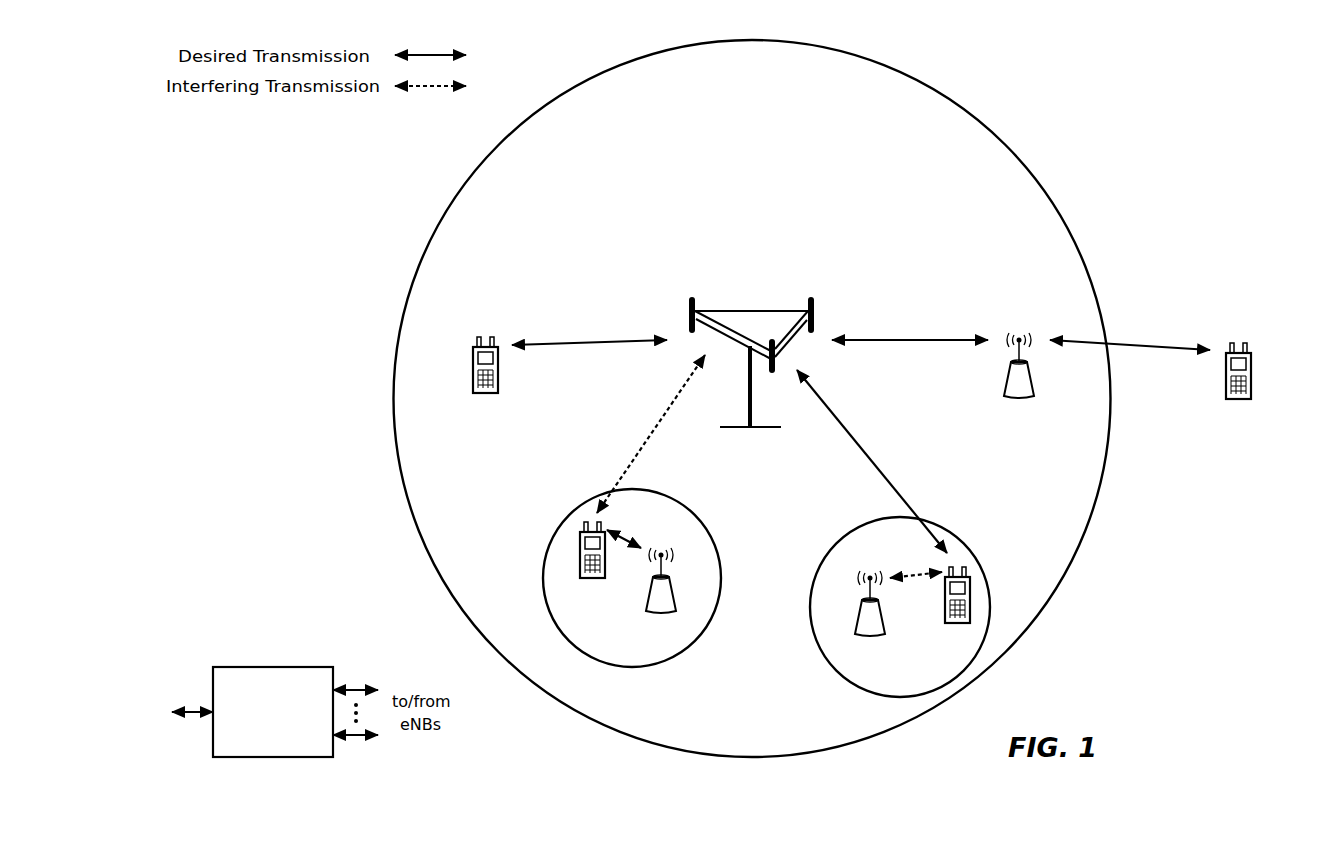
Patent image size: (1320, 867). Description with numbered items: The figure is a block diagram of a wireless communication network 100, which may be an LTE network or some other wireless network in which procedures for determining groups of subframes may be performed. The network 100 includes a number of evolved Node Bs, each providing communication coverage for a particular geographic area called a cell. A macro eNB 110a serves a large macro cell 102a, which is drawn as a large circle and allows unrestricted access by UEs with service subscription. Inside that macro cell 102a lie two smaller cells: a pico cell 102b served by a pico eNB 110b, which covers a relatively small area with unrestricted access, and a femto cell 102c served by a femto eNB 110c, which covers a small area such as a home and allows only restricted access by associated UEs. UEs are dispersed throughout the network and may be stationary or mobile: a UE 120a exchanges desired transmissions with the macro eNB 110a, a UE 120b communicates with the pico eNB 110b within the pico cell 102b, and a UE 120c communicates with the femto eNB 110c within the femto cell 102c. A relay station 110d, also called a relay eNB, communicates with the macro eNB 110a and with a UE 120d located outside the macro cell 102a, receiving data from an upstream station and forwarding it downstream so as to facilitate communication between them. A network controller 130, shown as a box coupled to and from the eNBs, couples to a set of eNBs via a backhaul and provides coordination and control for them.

The wireless communication network 100 is at (1170, 100).
The macro cell 102a is at (988, 129).
The pico cell 102b is at (698, 516).
The femto cell 102c is at (832, 545).
The macro eNB 110a is at (751, 310).
The pico eNB 110b is at (675, 602).
The femto eNB 110c is at (857, 617).
The relay station 110d is at (1020, 334).
The UE 120a is at (473, 358).
The UE 120b is at (580, 568).
The UE 120c is at (945, 614).
The UE 120d is at (1251, 364).
The network controller 130 is at (268, 666).